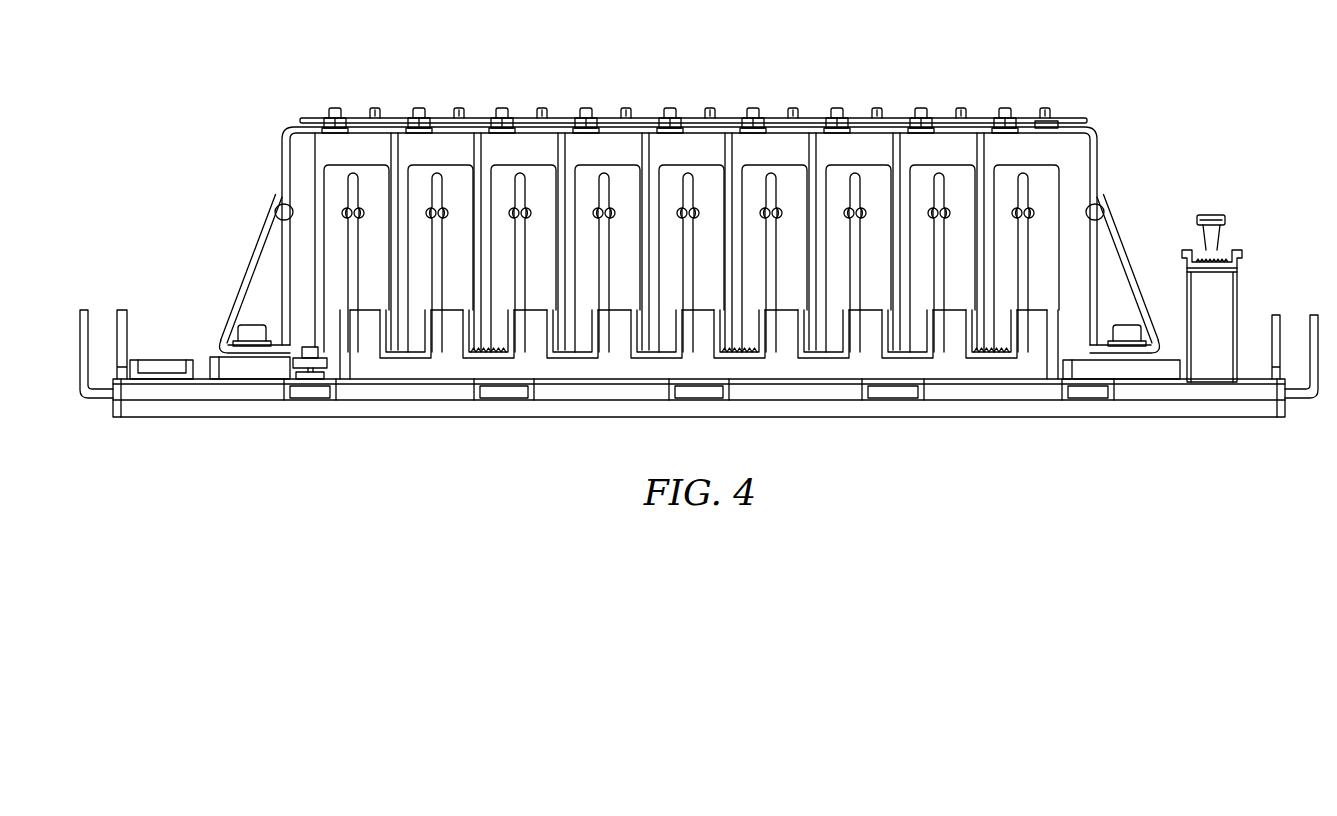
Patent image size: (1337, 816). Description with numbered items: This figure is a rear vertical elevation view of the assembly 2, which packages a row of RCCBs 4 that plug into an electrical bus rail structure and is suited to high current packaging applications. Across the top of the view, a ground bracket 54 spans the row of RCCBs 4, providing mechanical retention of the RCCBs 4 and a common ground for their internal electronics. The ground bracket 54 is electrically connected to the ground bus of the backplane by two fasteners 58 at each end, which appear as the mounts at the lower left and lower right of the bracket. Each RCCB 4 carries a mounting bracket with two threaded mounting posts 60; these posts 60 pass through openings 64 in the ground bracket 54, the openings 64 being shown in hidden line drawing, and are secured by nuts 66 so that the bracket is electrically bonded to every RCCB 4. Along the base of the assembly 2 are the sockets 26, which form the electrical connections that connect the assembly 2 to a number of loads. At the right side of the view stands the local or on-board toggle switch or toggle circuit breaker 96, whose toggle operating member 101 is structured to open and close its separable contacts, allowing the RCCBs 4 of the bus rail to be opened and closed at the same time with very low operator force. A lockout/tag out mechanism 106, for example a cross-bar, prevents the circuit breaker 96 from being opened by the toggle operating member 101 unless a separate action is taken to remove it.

The assembly 2 is at (712, 78).
The RCCB 4 is at (372, 192).
The socket 26 is at (613, 345).
The ground bracket 54 is at (1102, 129).
The fastener 58 is at (249, 323).
The threaded mounting post 60 is at (418, 106).
The opening 64 is at (393, 139).
The nut 66 is at (322, 117).
The toggle circuit breaker 96 is at (1238, 296).
The toggle operating member 101 is at (1207, 214).
The lockout/tag out mechanism 106 is at (1215, 250).